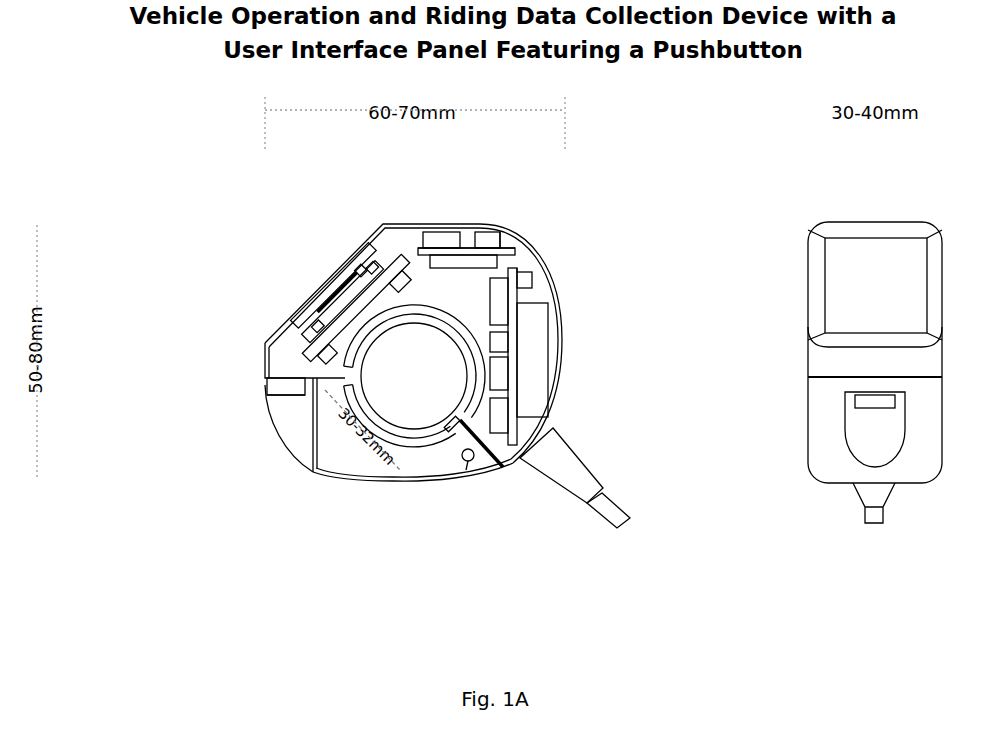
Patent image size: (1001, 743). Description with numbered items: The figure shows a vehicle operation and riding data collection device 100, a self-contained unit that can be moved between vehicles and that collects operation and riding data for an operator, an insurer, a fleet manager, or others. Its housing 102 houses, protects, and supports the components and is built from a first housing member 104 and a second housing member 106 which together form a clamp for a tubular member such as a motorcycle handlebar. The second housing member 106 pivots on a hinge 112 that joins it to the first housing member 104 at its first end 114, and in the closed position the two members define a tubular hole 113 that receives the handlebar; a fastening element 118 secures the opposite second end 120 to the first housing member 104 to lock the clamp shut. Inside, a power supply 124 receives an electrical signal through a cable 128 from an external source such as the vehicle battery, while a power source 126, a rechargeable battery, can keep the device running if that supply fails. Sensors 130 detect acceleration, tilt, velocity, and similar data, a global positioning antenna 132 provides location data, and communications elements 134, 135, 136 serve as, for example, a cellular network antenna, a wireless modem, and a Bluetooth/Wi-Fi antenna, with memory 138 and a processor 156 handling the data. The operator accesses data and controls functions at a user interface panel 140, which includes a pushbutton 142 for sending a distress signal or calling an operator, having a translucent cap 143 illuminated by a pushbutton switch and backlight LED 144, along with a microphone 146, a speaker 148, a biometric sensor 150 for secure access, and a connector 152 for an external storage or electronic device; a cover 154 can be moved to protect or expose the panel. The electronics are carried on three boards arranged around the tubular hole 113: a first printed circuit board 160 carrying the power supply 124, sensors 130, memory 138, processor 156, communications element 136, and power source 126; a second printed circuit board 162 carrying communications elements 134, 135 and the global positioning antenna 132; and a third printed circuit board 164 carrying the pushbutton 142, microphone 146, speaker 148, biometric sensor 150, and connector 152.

The vehicle operation and riding data collection device 100 is at (408, 576).
The housing 102 is at (362, 488).
The first housing member 104 is at (263, 357).
The second housing member 106 is at (313, 466).
The hinge 112 is at (466, 462).
The tubular hole 113 is at (416, 383).
The first end 114 is at (500, 440).
The fastening element 118 is at (290, 392).
The second end 120 is at (268, 384).
The power supply 124 is at (500, 462).
The power source 126 is at (526, 397).
The cable 128 is at (604, 488).
The sensors 130 is at (502, 368).
The global positioning antenna 132 is at (442, 232).
The communications element 134 is at (480, 232).
The communications element 135 is at (477, 268).
The communications element 136 is at (525, 272).
The memory 138 is at (502, 335).
The user interface panel 140 is at (315, 301).
The pushbutton 142 is at (308, 318).
The cap 143 is at (342, 281).
The pushbutton switch and backlight LED 144 is at (298, 293).
The microphone 146 is at (311, 330).
The speaker 148 is at (362, 256).
The biometric sensor 150 is at (332, 313).
The connector 152 is at (318, 326).
The cover 154 is at (353, 272).
The processor 156 is at (502, 303).
The first printed circuit board 160 is at (523, 268).
The second printed circuit board 162 is at (498, 232).
The third printed circuit board 164 is at (378, 243).